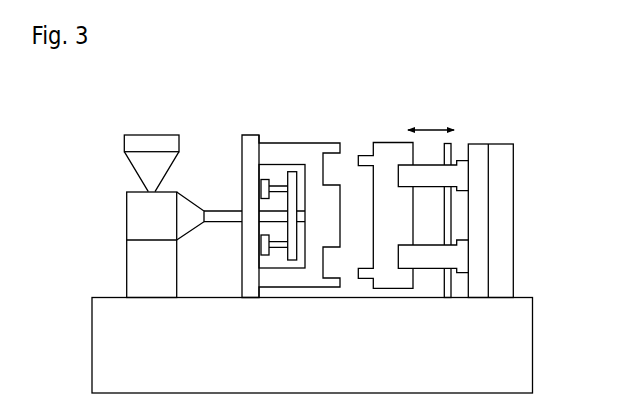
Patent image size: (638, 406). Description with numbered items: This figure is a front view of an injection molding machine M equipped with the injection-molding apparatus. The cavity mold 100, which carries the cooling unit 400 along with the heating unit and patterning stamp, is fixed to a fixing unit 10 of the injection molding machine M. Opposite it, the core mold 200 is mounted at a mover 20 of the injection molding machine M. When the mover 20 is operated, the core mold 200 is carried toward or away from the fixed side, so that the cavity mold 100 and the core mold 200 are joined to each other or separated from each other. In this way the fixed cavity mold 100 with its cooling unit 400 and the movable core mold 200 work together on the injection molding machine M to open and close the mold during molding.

The fixing unit 10 is at (133, 264).
The mover 20 is at (506, 218).
The cavity mold 100 is at (314, 135).
The core mold 200 is at (392, 132).
The cooling unit 400 is at (282, 172).
The injection molding machine M is at (88, 333).